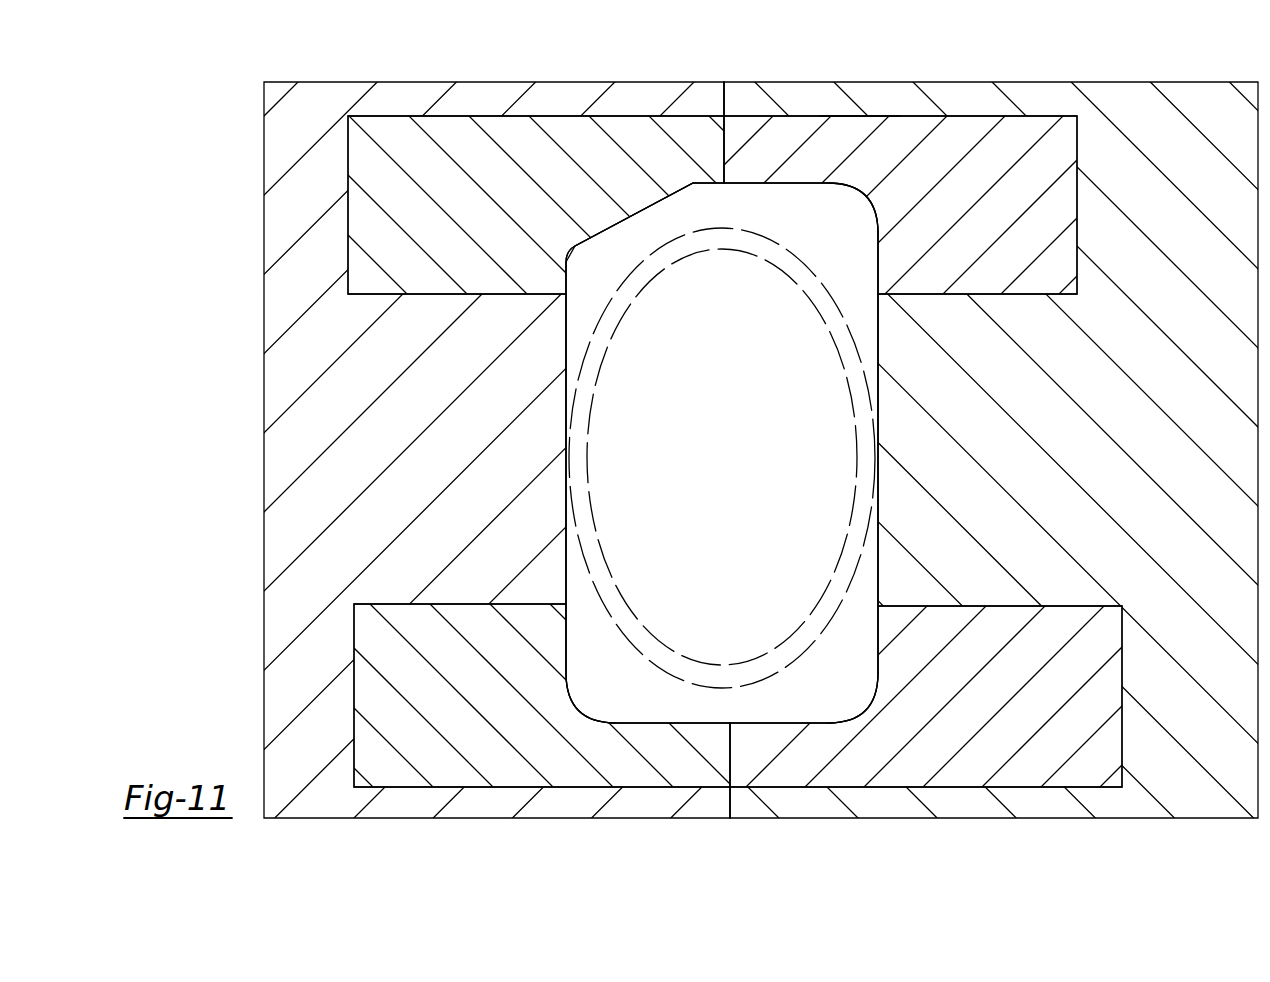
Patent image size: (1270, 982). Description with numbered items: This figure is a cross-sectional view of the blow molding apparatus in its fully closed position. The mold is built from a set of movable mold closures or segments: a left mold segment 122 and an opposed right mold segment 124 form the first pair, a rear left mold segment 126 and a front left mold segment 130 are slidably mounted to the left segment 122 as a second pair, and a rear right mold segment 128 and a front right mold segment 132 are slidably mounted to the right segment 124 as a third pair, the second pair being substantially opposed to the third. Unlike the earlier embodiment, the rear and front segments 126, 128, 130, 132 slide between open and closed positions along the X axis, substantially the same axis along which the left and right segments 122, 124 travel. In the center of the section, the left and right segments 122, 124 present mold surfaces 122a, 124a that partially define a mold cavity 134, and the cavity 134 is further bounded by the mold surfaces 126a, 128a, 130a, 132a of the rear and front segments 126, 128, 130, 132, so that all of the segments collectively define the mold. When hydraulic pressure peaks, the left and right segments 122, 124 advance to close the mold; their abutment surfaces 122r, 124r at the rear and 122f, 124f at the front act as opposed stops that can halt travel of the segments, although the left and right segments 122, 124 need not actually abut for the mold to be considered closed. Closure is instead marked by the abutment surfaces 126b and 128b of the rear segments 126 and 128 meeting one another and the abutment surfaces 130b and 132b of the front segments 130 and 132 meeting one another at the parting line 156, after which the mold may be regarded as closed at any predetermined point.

The left mold segment 122 is at (365, 447).
The right mold segment 124 is at (1057, 456).
The rear left mold segment 126 is at (471, 175).
The rear right mold segment 128 is at (905, 177).
The front left mold segment 130 is at (474, 705).
The front right mold segment 132 is at (964, 709).
The mold cavity 134 is at (702, 523).
The parting line 156 is at (858, 114).
The mold surface 122a is at (567, 338).
The mold surface 124a is at (878, 338).
The mold surface 126a is at (659, 203).
The mold surface 128a is at (826, 117).
The mold surface 130a is at (585, 690).
The mold surface 132a is at (873, 700).
The abutment surface 122r is at (724, 83).
The abutment surface 124r is at (724, 101).
The abutment surface 126b is at (724, 127).
The abutment surface 128b is at (724, 150).
The abutment surface 122f is at (730, 806).
The abutment surface 124f is at (730, 789).
The abutment surface 130b is at (730, 757).
The abutment surface 132b is at (730, 733).